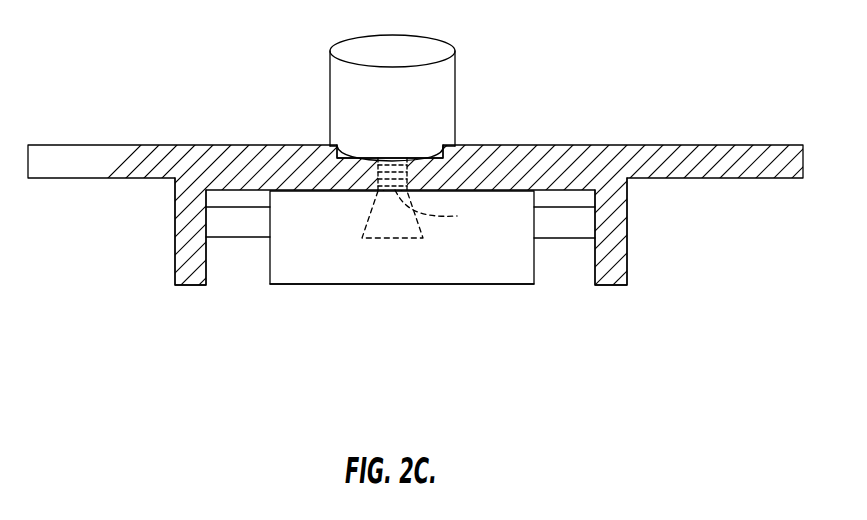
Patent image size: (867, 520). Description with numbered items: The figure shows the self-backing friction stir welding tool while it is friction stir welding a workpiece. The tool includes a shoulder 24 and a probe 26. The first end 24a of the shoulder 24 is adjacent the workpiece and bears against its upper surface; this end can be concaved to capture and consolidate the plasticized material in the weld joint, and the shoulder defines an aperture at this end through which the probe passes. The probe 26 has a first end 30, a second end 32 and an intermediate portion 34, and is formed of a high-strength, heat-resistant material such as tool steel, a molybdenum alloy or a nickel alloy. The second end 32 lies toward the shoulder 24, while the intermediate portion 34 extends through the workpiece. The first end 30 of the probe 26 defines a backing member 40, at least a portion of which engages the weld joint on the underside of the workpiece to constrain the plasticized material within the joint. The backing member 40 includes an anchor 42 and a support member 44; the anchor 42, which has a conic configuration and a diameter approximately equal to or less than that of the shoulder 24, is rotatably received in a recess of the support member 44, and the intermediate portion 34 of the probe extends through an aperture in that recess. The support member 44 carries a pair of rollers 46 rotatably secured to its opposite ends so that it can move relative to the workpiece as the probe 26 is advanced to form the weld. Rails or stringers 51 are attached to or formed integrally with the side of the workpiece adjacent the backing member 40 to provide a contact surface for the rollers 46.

The shoulder 24 is at (407, 106).
The first end of the shoulder 24a is at (357, 157).
The probe 26 is at (410, 180).
The first end of the probe 30 is at (441, 209).
The second end of the probe 32 is at (393, 158).
The intermediate portion of the probe 34 is at (378, 176).
The backing member 40 is at (416, 308).
The anchor 42 is at (400, 224).
The support member 44 is at (346, 264).
The rollers 46 is at (577, 222).
The rails or stringers 51 is at (622, 256).